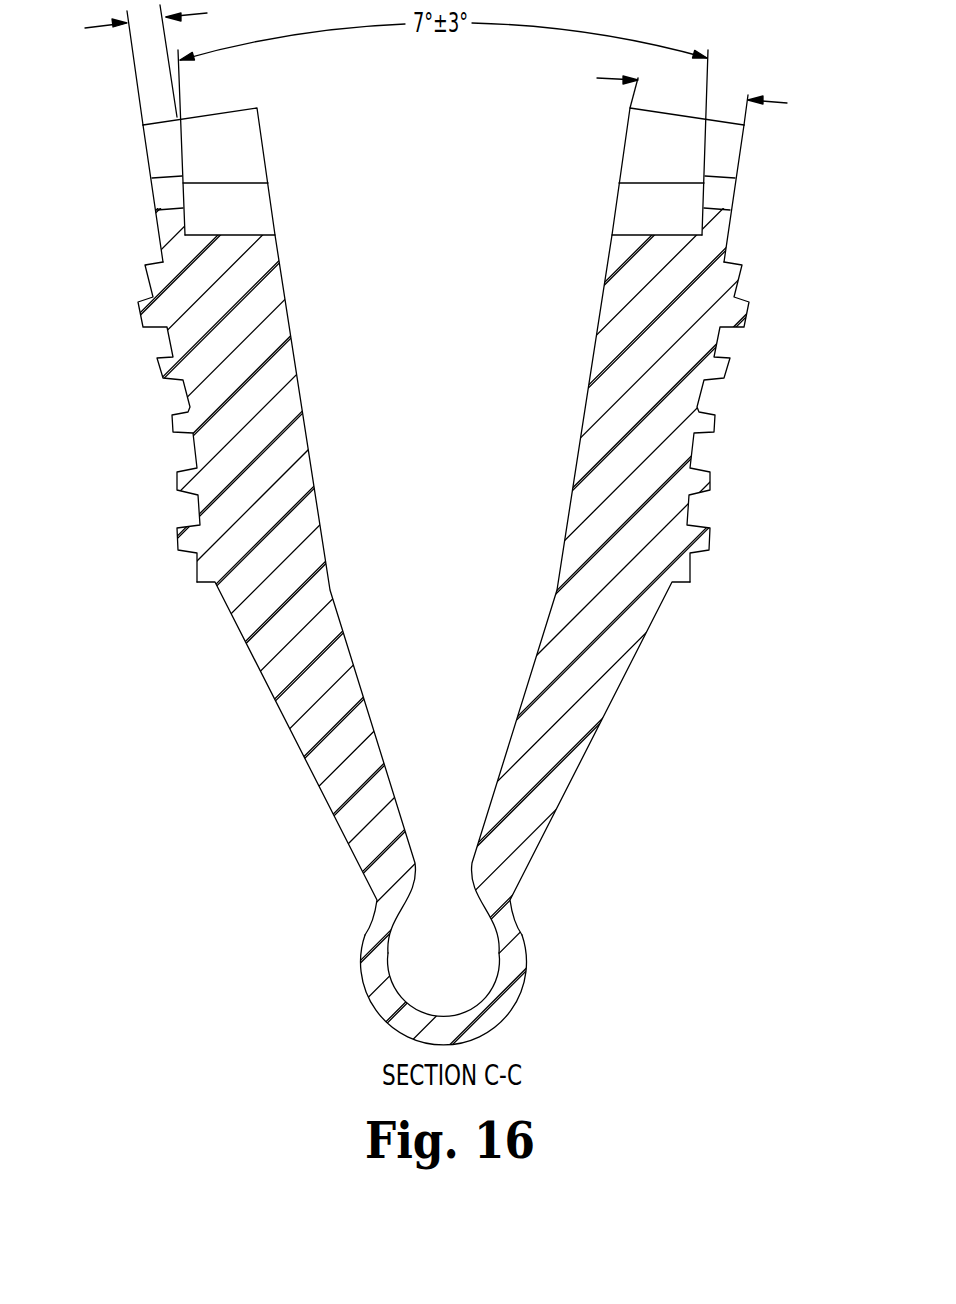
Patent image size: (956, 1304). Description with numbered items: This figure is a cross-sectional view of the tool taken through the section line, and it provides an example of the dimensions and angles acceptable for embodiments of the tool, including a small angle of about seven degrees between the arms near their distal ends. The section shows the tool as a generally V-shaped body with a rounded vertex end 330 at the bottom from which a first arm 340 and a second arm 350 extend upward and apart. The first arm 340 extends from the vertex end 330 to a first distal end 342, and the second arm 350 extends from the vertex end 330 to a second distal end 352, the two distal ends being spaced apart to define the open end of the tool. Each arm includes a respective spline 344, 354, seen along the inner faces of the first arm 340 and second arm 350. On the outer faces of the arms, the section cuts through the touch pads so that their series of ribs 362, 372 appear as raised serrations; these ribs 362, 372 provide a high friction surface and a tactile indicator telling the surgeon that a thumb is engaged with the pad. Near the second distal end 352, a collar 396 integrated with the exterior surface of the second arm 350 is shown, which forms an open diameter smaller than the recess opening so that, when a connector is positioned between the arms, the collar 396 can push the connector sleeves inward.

The vertex end 330 is at (467, 1017).
The first arm 340 is at (296, 697).
The first distal end 342 is at (167, 119).
The spline 344 is at (277, 420).
The second arm 350 is at (591, 697).
The second distal end 352 is at (733, 120).
The spline 354 is at (593, 453).
The ribs 362 is at (170, 428).
The ribs 372 is at (705, 425).
The collar 396 is at (721, 178).